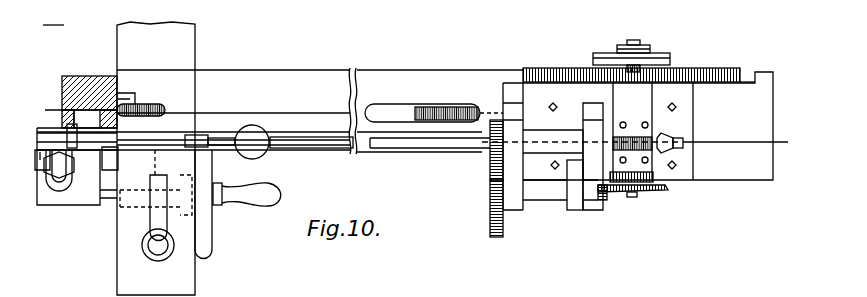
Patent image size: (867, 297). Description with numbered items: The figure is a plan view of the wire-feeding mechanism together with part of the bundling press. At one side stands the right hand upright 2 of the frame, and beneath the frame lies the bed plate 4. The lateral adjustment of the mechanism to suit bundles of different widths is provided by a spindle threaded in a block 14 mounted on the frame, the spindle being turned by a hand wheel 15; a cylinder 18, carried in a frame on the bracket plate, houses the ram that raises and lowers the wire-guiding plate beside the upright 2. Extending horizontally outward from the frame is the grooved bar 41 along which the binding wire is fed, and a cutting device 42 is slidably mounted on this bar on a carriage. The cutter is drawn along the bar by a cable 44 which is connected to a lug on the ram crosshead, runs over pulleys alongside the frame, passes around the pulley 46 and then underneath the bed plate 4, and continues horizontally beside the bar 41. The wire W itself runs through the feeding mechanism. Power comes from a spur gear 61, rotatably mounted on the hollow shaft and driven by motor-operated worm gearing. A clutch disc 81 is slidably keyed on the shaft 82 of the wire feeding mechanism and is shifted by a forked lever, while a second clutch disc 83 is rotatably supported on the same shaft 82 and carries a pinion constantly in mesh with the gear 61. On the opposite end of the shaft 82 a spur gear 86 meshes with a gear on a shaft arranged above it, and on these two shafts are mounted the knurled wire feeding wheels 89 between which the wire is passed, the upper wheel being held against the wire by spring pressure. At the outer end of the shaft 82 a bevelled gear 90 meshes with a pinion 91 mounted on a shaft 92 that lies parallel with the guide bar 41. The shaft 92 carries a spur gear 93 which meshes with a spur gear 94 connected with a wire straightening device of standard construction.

The right hand upright 2 is at (93, 88).
The bed plate 4 is at (48, 38).
The block 14 is at (124, 210).
The hand wheel 15 is at (206, 249).
The cylinder 18 is at (61, 175).
The grooved bar 41 is at (334, 150).
The cutting device 42 is at (222, 140).
The cable 44 is at (316, 113).
The pulley 46 is at (152, 106).
The spur gear 61 is at (700, 68).
The clutch disc 81 is at (598, 56).
The shaft 82 is at (633, 40).
The clutch disc 83 is at (670, 63).
The spur gear 86 is at (655, 180).
The knurled wire feeding wheels 89 is at (645, 142).
The bevelled gear 90 is at (655, 191).
The pinion 91 is at (600, 200).
The shaft 92 is at (553, 200).
The spur gear 93 is at (492, 225).
The spur gear 94 is at (492, 160).
The work piece W is at (175, 137).